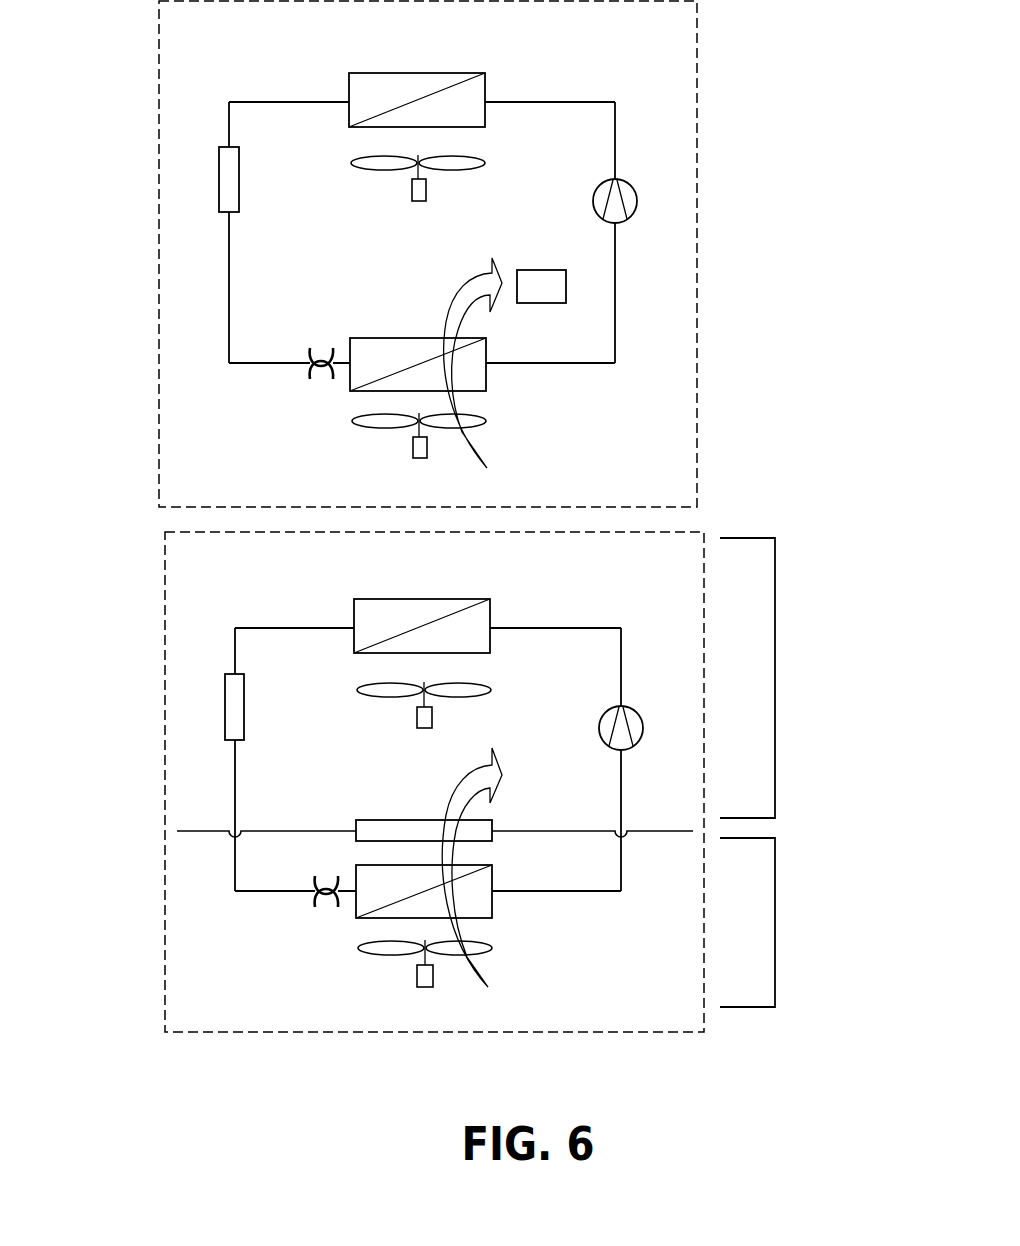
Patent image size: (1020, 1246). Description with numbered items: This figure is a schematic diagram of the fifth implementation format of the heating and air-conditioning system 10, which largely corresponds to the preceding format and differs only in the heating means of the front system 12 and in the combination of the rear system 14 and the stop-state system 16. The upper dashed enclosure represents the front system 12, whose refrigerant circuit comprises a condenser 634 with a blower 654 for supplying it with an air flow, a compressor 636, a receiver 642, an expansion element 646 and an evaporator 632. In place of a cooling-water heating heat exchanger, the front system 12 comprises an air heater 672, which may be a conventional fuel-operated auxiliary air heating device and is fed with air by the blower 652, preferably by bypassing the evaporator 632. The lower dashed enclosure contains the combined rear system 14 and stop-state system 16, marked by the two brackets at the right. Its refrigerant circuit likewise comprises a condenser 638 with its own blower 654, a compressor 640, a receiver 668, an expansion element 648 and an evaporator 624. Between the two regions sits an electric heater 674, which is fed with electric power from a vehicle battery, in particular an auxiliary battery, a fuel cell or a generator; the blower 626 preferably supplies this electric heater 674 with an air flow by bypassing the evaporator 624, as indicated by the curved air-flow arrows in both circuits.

The heating and air-conditioning system 10 is at (132, 54).
The front system 12 is at (697, 226).
The rear system 14 is at (775, 692).
The stop-state system 16 is at (775, 954).
The evaporator 624 is at (492, 912).
The blower 626 is at (417, 978).
The evaporator 632 is at (381, 338).
The condenser 634 is at (452, 73).
The compressor 636 is at (637, 195).
The condenser 638 is at (448, 599).
The compressor 640 is at (640, 712).
The receiver 642 is at (219, 184).
The expansion element 646 is at (320, 382).
The expansion element 648 is at (327, 909).
The blower 652 is at (413, 447).
The blower 654 is at (412, 190).
The receiver 668 is at (225, 701).
The air heater 672 is at (544, 278).
The electric heater 674 is at (390, 820).